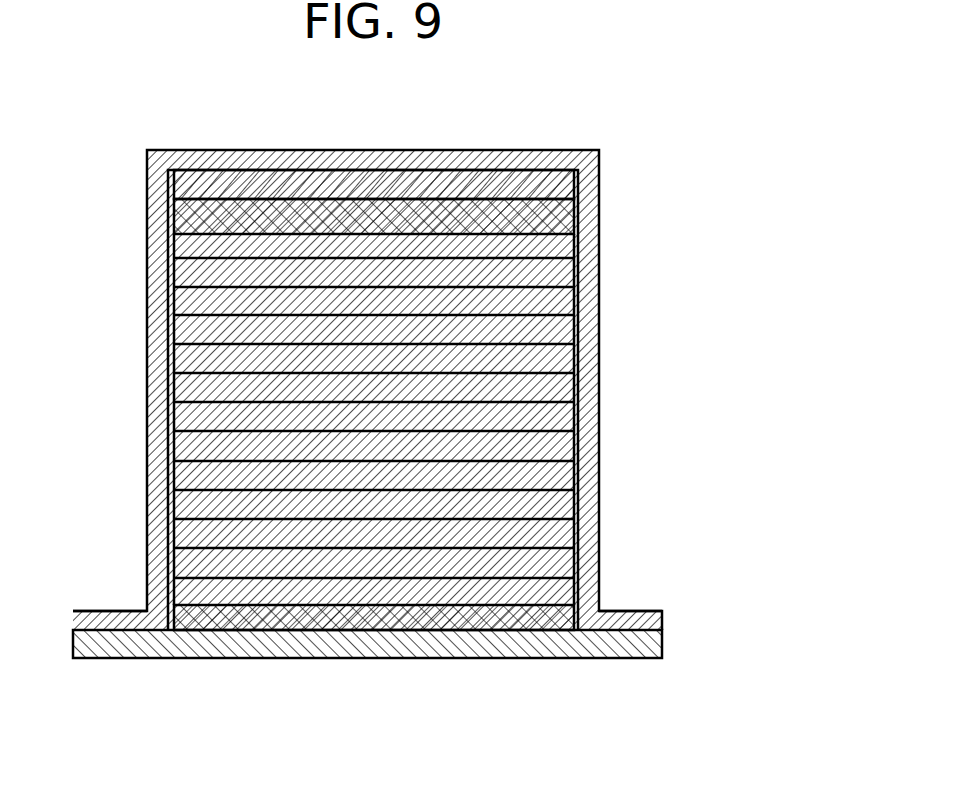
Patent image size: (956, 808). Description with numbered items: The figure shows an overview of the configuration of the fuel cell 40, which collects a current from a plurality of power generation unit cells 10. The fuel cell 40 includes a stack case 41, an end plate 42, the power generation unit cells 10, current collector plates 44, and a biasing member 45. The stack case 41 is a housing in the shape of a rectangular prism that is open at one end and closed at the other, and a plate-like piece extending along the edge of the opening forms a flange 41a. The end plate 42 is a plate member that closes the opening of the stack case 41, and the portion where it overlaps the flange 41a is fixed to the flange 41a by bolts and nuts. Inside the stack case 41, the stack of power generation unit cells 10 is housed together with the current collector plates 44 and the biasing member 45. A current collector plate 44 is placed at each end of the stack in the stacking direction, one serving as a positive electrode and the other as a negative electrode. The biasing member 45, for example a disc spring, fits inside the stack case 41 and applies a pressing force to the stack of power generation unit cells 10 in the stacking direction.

The fuel cell 40 is at (604, 110).
The stack case 41 is at (146, 375).
The flange 41a is at (92, 610).
The end plate 42 is at (187, 648).
The current collector plate 44 is at (577, 219).
The biasing member 45 is at (547, 183).
The power generation unit cell 10 is at (562, 276).